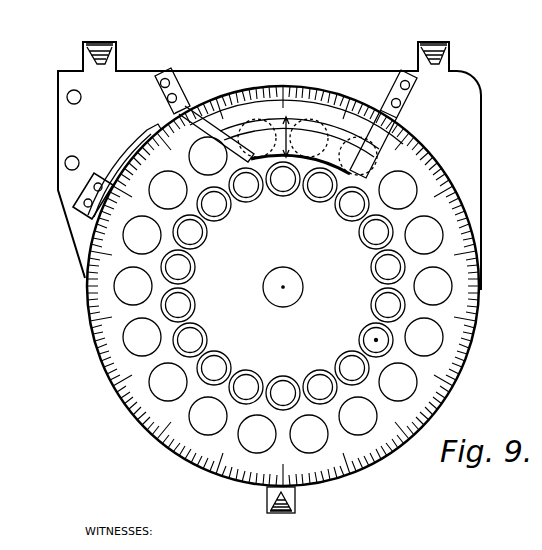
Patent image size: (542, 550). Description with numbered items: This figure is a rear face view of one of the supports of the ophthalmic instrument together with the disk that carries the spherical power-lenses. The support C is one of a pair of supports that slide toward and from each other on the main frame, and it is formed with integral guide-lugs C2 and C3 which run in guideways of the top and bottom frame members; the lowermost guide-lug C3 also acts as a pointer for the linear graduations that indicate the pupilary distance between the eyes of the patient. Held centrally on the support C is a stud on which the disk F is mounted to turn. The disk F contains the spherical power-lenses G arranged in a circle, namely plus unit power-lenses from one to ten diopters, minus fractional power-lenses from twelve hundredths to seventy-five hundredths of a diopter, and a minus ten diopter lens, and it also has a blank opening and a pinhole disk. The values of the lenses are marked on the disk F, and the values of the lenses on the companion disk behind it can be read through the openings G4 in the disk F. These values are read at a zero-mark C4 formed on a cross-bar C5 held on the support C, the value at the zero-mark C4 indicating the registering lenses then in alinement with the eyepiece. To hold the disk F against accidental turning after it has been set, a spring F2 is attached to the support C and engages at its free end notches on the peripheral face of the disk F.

The support C is at (60, 128).
The guide-lug C2 is at (103, 42).
The guide-lug C3 is at (283, 2).
The zero-mark C4 is at (289, 114).
The cross-bar C5 is at (353, 168).
The disk F is at (140, 398).
The spring F2 is at (133, 146).
The spherical power-lens G is at (174, 372).
The opening G4 is at (207, 338).